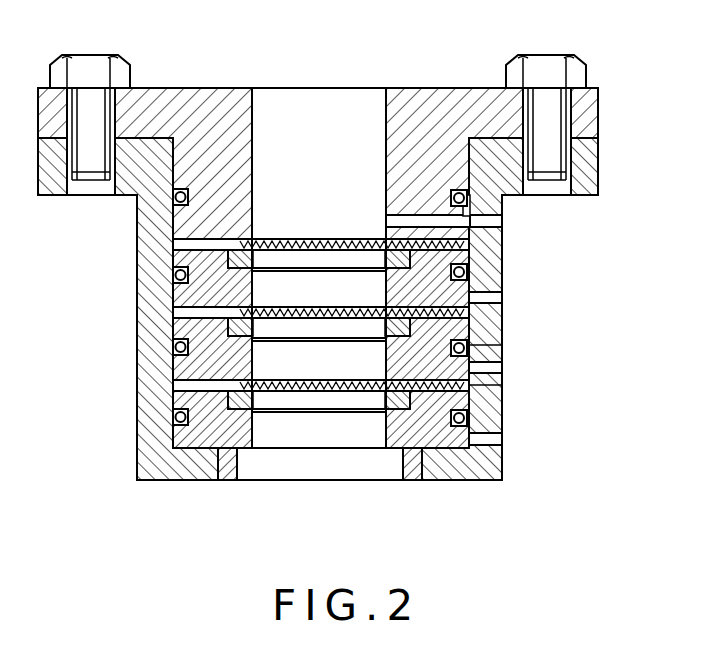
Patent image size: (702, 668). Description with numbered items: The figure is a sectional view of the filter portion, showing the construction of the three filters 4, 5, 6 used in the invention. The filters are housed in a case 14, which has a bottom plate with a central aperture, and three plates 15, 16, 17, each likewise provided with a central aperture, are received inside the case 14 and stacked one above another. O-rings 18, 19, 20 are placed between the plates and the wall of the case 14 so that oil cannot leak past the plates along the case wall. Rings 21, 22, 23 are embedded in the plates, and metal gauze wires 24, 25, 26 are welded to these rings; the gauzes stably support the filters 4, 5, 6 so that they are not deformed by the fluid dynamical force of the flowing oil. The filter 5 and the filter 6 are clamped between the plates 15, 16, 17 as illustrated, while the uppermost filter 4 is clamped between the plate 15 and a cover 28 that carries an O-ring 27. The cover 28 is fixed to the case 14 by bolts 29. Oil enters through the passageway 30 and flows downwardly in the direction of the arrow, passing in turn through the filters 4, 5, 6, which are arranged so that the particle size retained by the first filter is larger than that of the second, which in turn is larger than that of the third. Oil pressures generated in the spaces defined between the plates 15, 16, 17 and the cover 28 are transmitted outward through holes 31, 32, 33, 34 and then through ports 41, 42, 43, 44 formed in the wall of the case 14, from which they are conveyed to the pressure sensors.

The filter 4 is at (296, 255).
The filter 5 is at (316, 325).
The filter 6 is at (343, 400).
The case 14 is at (488, 482).
The plate 15 is at (175, 254).
The plate 16 is at (190, 320).
The plate 17 is at (173, 448).
The O-ring 18 is at (174, 276).
The O-ring 19 is at (175, 355).
The O-ring 20 is at (180, 422).
The ring 21 is at (469, 262).
The ring 22 is at (502, 352).
The ring 23 is at (217, 452).
The metal gauze wire 24 is at (228, 260).
The metal gauze wire 25 is at (230, 345).
The metal gauze wire 26 is at (290, 395).
The O-ring 27 is at (468, 88).
The cover 28 is at (190, 88).
The bolt 29 is at (90, 55).
The passageway 30 is at (280, 95).
The hole 31 is at (482, 295).
The hole 32 is at (502, 385).
The hole 33 is at (413, 455).
The hole 34 is at (421, 222).
The port 41 is at (502, 300).
The port 42 is at (502, 370).
The port 43 is at (502, 440).
The port 44 is at (502, 218).